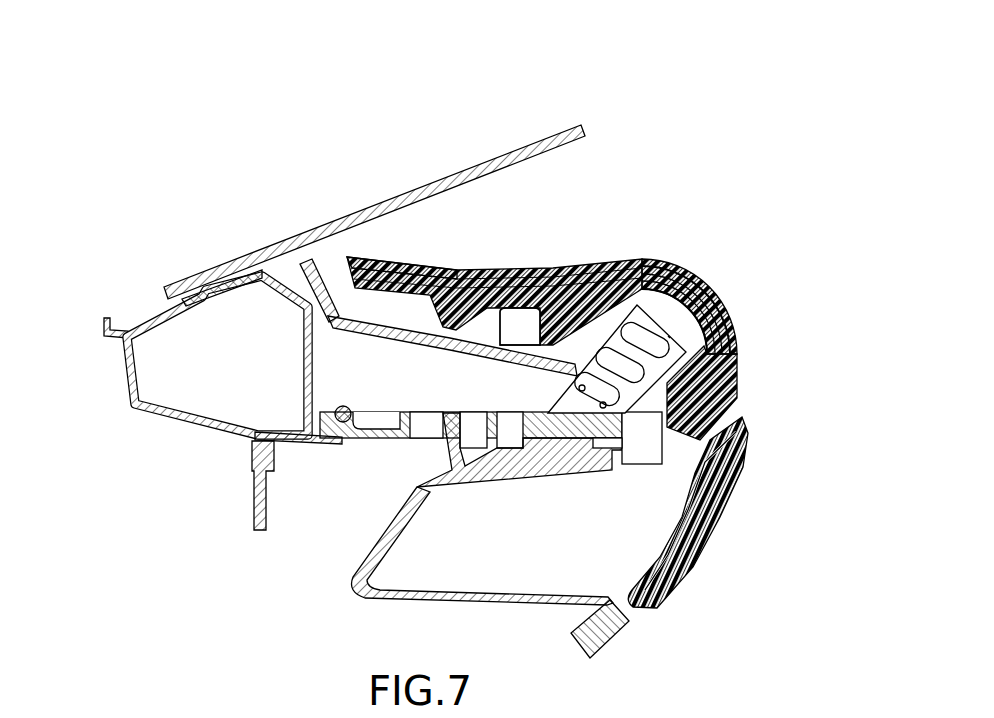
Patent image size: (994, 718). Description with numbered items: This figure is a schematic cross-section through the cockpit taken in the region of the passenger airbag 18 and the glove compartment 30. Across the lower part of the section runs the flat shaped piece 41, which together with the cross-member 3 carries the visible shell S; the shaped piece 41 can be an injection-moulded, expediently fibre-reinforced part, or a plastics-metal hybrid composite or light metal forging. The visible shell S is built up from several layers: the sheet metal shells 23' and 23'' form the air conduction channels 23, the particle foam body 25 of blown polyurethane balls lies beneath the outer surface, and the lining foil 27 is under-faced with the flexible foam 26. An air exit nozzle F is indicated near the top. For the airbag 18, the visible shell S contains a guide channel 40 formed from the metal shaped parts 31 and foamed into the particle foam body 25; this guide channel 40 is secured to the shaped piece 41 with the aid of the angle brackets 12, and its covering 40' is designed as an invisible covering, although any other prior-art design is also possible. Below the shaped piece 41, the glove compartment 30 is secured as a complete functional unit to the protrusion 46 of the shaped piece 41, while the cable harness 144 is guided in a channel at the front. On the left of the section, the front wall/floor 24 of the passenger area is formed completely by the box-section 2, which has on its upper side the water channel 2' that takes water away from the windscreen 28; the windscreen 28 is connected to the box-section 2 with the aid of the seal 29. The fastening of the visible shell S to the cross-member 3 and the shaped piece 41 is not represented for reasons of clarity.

The box-section 2 is at (234, 380).
The water channel 2' is at (113, 282).
The cross-member 3 is at (642, 452).
The angle brackets 12 is at (563, 389).
The passenger airbag 18 is at (668, 336).
The air conduction channels 23 is at (494, 332).
The sheet metal shell 23' is at (407, 245).
The sheet metal shell 23'' is at (522, 281).
The front wall/floor 24 is at (254, 500).
The particle foam body 25 is at (573, 283).
The flexible foam 26 is at (628, 268).
The lining foil 27 is at (592, 265).
The windscreen 28 is at (537, 142).
The seal 29 is at (233, 292).
The glove compartment 30 is at (658, 532).
The metal shaped parts 31 is at (660, 287).
The guide channel 40 is at (764, 295).
The covering 40' is at (710, 269).
The flat shaped piece 41 is at (397, 398).
The protrusion 46 is at (455, 454).
The cable harness 144 is at (342, 406).
The air exit nozzle F is at (337, 212).
The visible shell S is at (750, 333).